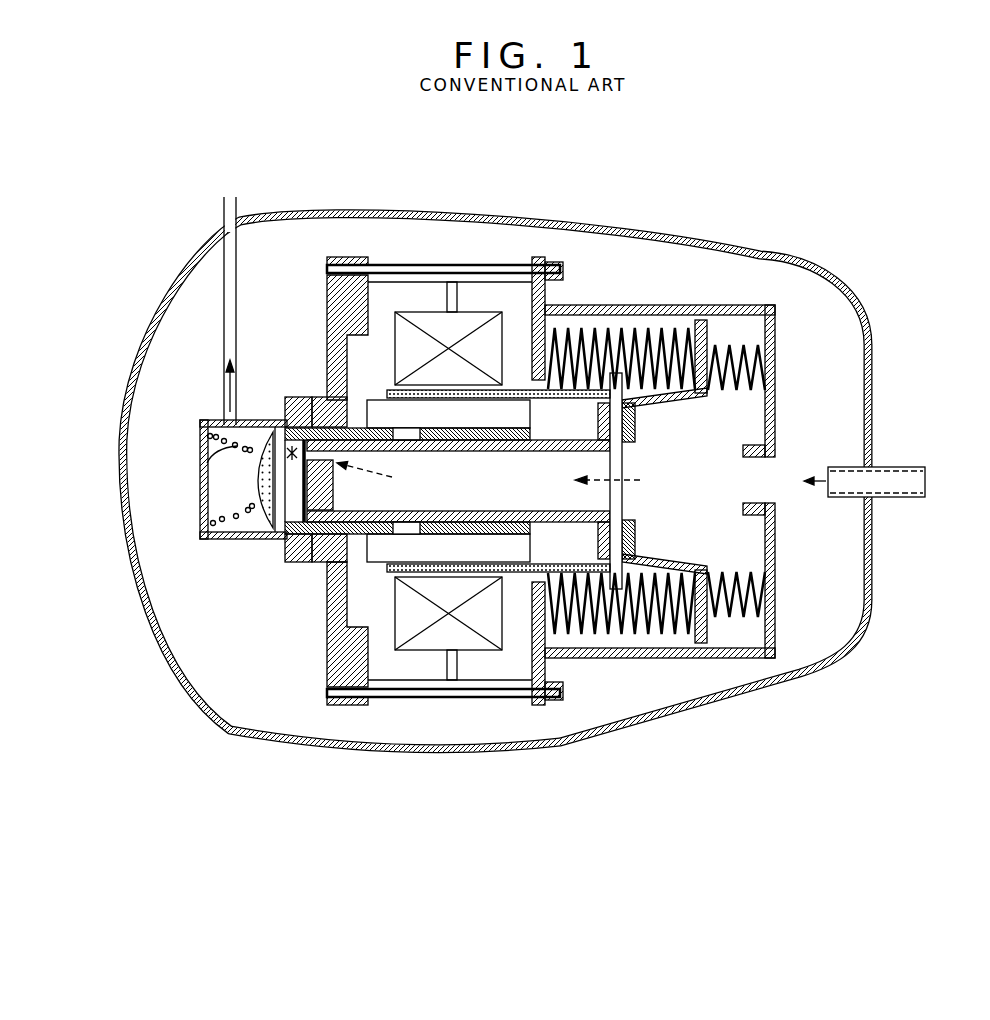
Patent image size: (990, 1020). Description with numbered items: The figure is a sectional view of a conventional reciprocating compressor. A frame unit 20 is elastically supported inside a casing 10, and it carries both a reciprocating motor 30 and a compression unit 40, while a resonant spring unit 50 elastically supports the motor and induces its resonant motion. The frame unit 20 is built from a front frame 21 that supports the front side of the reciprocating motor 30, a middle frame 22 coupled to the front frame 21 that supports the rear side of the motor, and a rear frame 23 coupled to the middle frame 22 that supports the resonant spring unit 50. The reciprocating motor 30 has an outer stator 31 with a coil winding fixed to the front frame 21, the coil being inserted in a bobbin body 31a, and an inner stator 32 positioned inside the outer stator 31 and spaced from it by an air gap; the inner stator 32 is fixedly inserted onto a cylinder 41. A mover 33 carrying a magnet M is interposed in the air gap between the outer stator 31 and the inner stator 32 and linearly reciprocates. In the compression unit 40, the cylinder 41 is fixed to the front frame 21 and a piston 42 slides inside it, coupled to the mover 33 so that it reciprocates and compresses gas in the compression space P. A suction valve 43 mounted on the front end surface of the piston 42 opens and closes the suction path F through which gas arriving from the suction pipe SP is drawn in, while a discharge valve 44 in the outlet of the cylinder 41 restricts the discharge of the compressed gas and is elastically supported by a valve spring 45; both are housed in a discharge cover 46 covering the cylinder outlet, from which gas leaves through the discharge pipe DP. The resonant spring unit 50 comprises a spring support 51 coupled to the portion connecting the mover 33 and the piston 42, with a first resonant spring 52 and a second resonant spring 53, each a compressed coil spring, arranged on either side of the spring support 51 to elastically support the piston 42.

The casing 10 is at (172, 293).
The frame unit 20 is at (551, 413).
The front frame 21 is at (347, 277).
The middle frame 22 is at (530, 263).
The rear frame 23 is at (610, 306).
The reciprocating motor 30 is at (437, 622).
The outer stator 31 is at (405, 548).
The bobbin body 31a is at (467, 637).
The inner stator 32 is at (368, 565).
The mover 33 is at (333, 600).
The compression unit 40 is at (168, 490).
The cylinder 41 is at (262, 536).
The piston 42 is at (207, 524).
The suction valve 43 is at (304, 498).
The discharge valve 44 is at (256, 483).
The valve spring 45 is at (207, 462).
The discharge cover 46 is at (162, 433).
The resonant spring unit 50 is at (669, 402).
The spring support 51 is at (703, 320).
The first resonant spring 52 is at (655, 336).
The second resonant spring 53 is at (745, 347).
The discharge pipe DP is at (225, 217).
The compression space P is at (290, 448).
The suction path F is at (441, 489).
The magnet M is at (500, 575).
The suction pipe SP is at (922, 479).